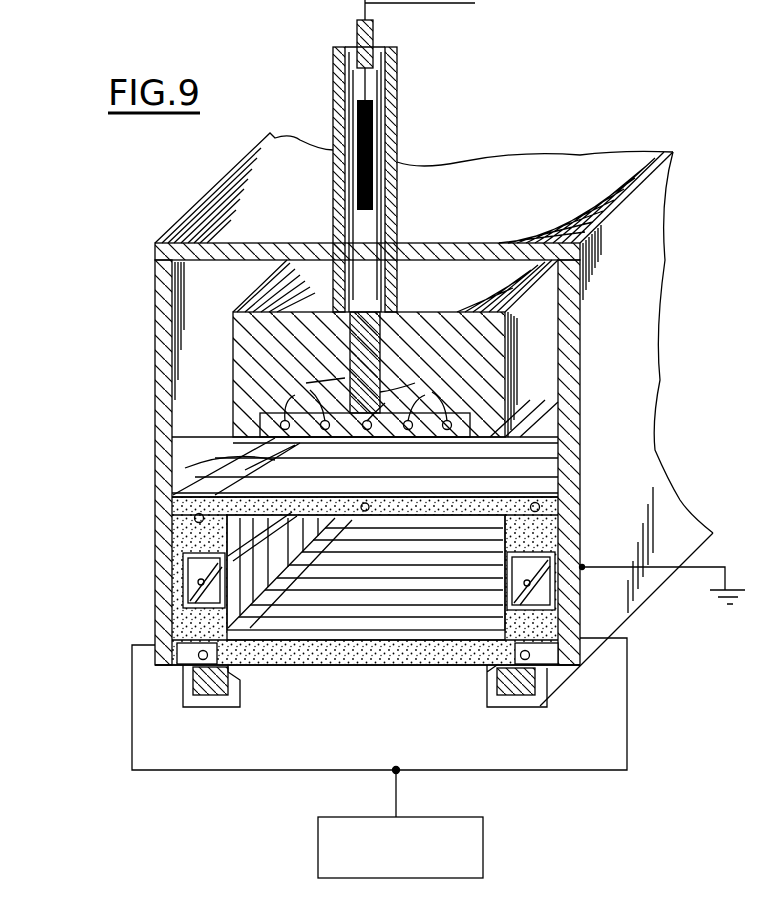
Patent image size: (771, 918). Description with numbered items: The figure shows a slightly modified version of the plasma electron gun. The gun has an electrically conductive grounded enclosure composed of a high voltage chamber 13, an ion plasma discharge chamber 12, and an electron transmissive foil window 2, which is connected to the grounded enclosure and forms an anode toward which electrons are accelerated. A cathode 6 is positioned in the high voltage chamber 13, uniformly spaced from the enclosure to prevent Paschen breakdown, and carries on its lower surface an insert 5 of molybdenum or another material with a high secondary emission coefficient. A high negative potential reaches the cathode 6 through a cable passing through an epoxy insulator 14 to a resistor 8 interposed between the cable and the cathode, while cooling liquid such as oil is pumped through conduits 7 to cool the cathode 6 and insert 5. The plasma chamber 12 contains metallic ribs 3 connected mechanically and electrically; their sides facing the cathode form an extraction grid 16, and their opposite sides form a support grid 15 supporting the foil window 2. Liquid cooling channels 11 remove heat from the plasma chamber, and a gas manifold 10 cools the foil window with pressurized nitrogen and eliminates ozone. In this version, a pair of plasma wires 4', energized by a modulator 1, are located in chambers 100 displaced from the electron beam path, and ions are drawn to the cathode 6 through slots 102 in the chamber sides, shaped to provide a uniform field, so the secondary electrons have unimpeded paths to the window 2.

The modulator 1 is at (484, 832).
The electron transmissive foil window 2 is at (418, 668).
The metallic ribs 3 is at (505, 485).
The plasma wires 4' is at (360, 561).
The insert 5 is at (262, 432).
The cathode 6 is at (540, 372).
The conduits 7 is at (366, 398).
The resistor 8 is at (365, 135).
The gas manifold 10 is at (207, 708).
The liquid cooling channels 11 is at (365, 508).
The ion plasma discharge chamber 12 is at (405, 588).
The high voltage chamber 13 is at (155, 350).
The epoxy insulator 14 is at (375, 28).
The support grid 15 is at (296, 650).
The extraction grid 16 is at (195, 468).
The chambers 100 is at (185, 612).
The slots 102 is at (257, 575).